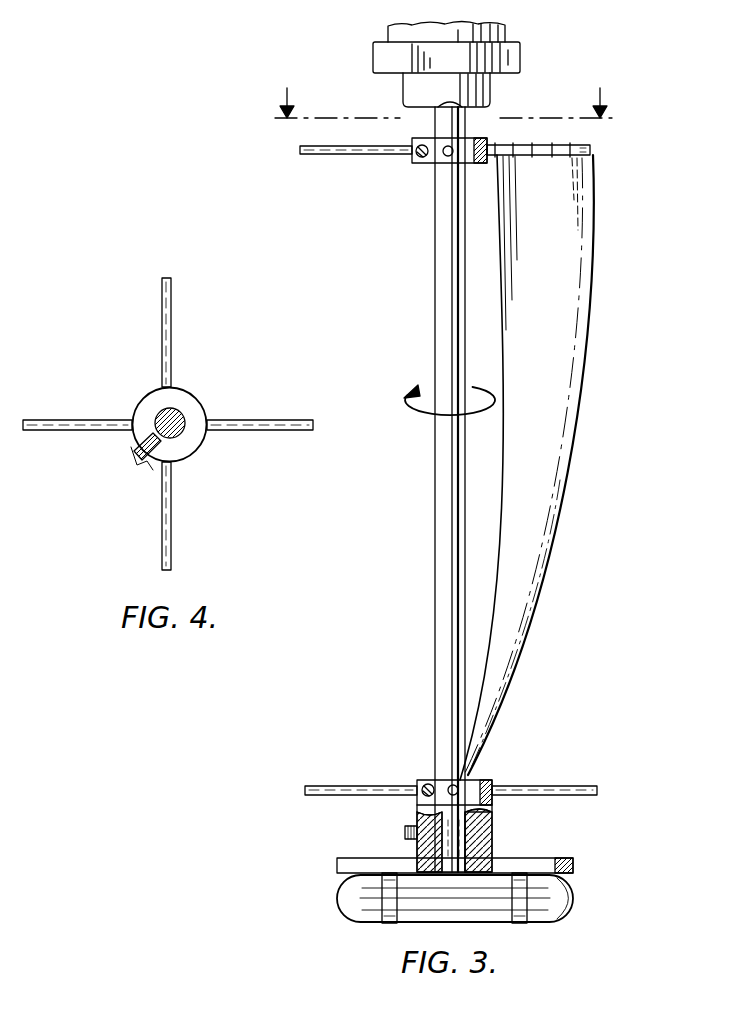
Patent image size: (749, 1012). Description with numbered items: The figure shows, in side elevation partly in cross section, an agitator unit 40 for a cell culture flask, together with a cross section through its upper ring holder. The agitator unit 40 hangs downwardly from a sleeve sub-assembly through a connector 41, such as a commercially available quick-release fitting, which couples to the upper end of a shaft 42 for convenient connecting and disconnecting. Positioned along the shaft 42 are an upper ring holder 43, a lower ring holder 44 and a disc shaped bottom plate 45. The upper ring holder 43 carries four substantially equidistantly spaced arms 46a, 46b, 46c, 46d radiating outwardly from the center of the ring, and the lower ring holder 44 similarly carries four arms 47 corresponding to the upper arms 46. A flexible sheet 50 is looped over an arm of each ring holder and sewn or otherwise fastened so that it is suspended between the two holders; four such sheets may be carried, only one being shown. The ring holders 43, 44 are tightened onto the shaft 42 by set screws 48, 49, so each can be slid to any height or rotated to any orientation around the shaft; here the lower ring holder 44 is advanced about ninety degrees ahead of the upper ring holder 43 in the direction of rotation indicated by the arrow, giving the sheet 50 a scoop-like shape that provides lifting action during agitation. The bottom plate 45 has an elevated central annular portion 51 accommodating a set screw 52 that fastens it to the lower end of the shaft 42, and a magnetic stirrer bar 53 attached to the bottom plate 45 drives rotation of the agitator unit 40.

In FIG. 3, the agitator unit 40 is at (426, 658).
In FIG. 3, the connector 41 is at (522, 60).
In FIG. 3, the shaft 42 is at (434, 292).
In FIG. 4, the shaft 42 is at (159, 412).
In FIG. 3, the upper ring holder 43 is at (432, 159).
In FIG. 4, the upper ring holder 43 is at (201, 451).
In FIG. 3, the lower ring holder 44 is at (483, 778).
In FIG. 3, the bottom plate 45 is at (553, 860).
In FIG. 3, the upper arms 46 is at (313, 156).
In FIG. 4, the arm 46a is at (172, 305).
In FIG. 4, the arm 46b is at (258, 419).
In FIG. 4, the arm 46c is at (174, 551).
In FIG. 4, the arm 46d is at (45, 433).
In FIG. 3, the arms 47 is at (549, 783).
In FIG. 3, the set screw 48 is at (419, 158).
In FIG. 4, the set screw 48 is at (135, 459).
In FIG. 3, the set screw 49 is at (426, 778).
In FIG. 3, the flexible sheet 50 is at (586, 380).
In FIG. 3, the elevated central annular portion 51 is at (493, 823).
In FIG. 3, the set screw 52 is at (405, 833).
In FIG. 3, the magnetic stirrer bar 53 is at (348, 905).